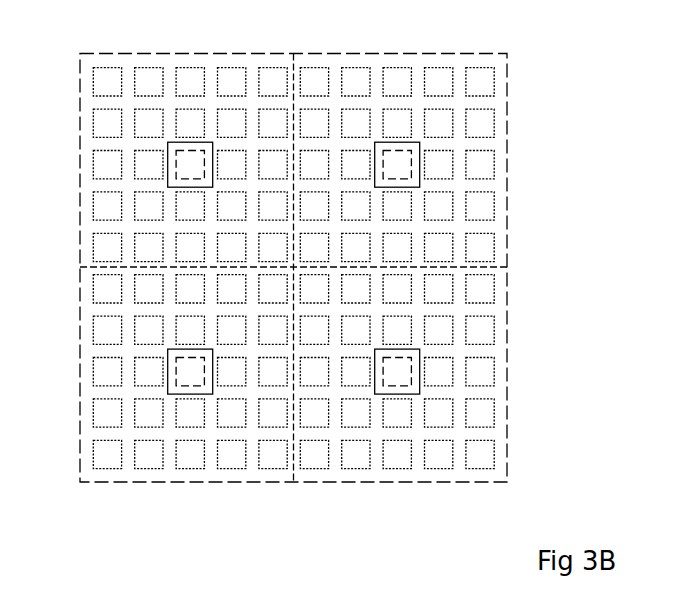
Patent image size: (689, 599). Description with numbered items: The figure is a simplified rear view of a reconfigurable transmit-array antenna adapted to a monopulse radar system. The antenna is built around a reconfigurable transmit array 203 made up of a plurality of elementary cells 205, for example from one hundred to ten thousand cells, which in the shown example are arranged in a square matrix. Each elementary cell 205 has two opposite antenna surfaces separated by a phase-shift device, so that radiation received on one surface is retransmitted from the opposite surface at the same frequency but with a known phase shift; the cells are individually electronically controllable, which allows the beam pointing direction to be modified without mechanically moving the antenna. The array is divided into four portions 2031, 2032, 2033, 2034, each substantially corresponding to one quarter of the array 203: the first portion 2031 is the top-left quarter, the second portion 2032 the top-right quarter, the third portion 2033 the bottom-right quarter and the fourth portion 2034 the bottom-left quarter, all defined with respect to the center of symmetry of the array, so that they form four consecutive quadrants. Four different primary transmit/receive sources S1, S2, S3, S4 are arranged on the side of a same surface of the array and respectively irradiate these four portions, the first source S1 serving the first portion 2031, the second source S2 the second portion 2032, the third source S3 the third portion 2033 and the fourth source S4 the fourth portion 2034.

The reconfigurable transmit array 203 is at (542, 73).
The first portion of array 2031 is at (183, 53).
The second portion of array 2032 is at (393, 53).
The third portion of array 2033 is at (422, 485).
The fourth portion of array 2034 is at (193, 483).
The elementary cell 205 is at (494, 243).
The first primary transmit/receive source S1 is at (168, 146).
The second primary transmit/receive source S2 is at (420, 146).
The third primary transmit/receive source S3 is at (420, 356).
The fourth primary transmit/receive source S4 is at (168, 387).